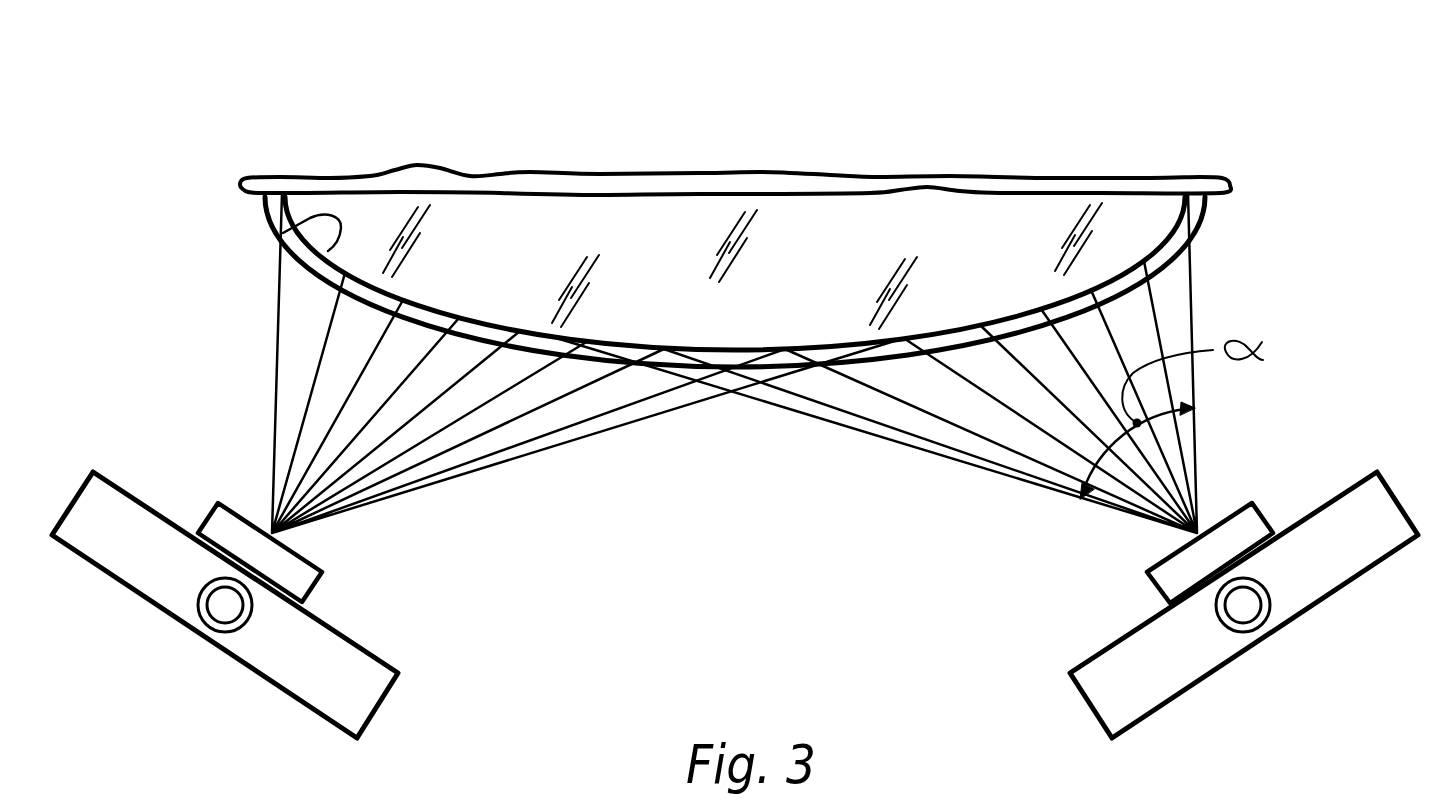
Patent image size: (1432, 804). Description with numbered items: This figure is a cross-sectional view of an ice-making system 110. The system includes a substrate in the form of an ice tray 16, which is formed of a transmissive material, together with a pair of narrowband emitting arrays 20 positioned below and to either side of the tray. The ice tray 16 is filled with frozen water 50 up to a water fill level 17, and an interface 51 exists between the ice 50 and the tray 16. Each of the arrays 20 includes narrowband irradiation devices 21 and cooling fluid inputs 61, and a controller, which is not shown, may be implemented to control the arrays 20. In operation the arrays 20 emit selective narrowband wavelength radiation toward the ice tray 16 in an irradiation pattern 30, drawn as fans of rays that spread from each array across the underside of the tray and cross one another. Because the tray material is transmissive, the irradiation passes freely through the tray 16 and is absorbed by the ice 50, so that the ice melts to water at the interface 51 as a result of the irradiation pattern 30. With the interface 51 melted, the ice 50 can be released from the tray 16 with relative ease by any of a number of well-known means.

The ice-making system 110 is at (1058, 108).
The water fill level 17 is at (1133, 193).
The ice tray 16 is at (1157, 256).
The frozen water 50 is at (652, 248).
The interface 51 is at (283, 233).
The irradiation pattern 30 is at (932, 452).
The narrowband emitting arrays 20 is at (352, 685).
The narrowband irradiation devices 21 is at (297, 578).
The cooling fluid inputs 61 is at (227, 603).